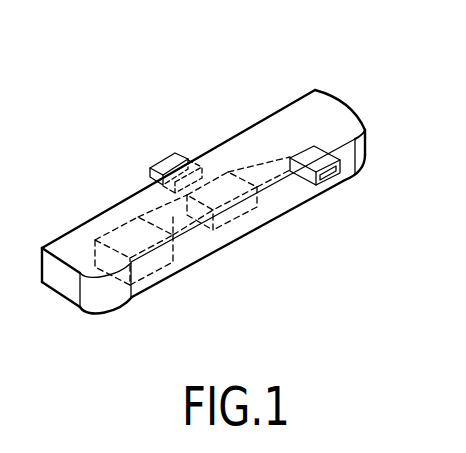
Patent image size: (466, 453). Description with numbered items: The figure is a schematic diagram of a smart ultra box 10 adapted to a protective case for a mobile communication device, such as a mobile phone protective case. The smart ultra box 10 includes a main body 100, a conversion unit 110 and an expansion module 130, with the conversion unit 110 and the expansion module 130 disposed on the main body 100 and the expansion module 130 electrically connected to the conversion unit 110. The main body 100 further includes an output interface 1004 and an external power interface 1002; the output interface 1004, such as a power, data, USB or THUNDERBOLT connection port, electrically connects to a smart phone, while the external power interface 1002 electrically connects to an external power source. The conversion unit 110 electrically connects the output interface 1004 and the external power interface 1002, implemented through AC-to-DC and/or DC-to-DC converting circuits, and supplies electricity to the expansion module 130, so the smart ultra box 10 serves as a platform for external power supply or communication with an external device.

The smart ultra box 10 is at (66, 57).
The main body 100 is at (258, 141).
The conversion unit 110 is at (225, 210).
The expansion module 130 is at (128, 235).
The external power interface 1002 is at (333, 177).
The output interface 1004 is at (163, 167).